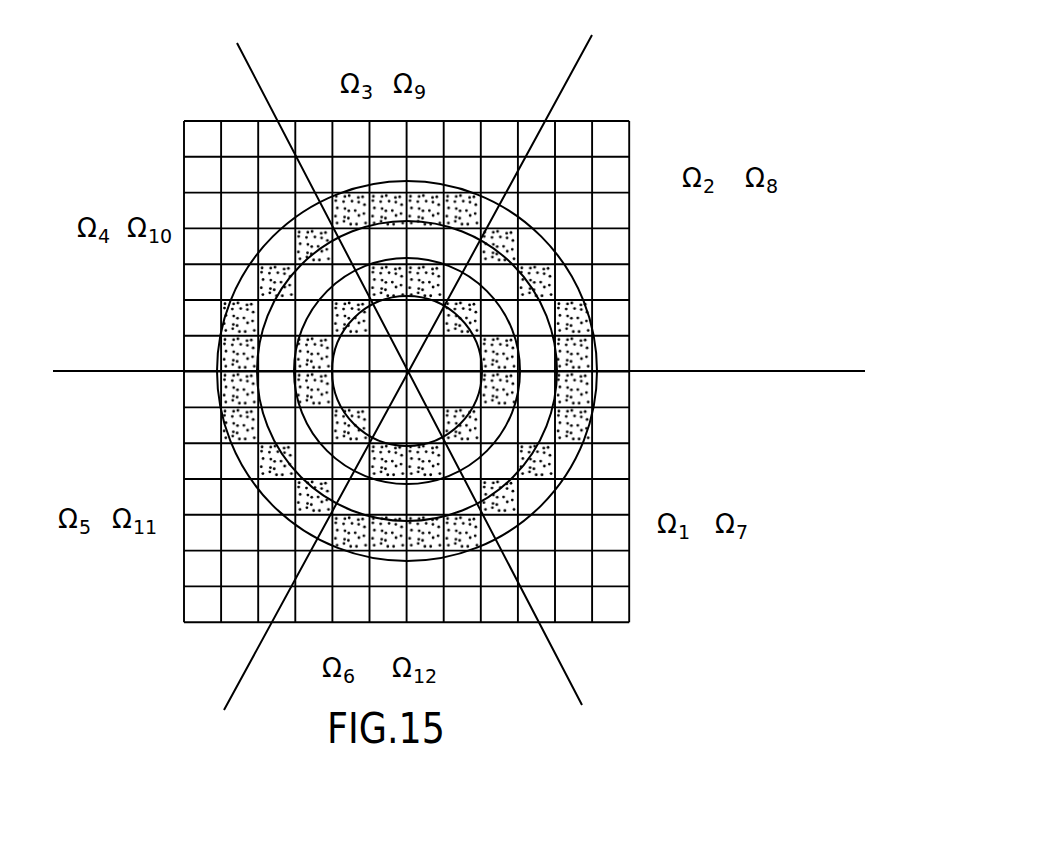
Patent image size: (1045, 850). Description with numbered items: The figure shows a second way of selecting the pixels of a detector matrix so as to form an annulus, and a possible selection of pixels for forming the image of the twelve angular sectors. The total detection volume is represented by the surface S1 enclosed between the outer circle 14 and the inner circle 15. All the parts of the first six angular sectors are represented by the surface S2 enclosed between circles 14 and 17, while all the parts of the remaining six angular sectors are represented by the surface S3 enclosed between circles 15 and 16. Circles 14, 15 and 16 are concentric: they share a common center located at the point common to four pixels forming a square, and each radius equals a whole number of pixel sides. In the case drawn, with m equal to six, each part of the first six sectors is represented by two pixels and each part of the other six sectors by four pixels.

The circle 14 is at (577, 283).
The circle 15 is at (473, 413).
The circle 16 is at (577, 263).
The circle 17 is at (590, 333).
The surface S1 is at (543, 392).
The surface S2 is at (567, 457).
The surface S3 is at (500, 250).